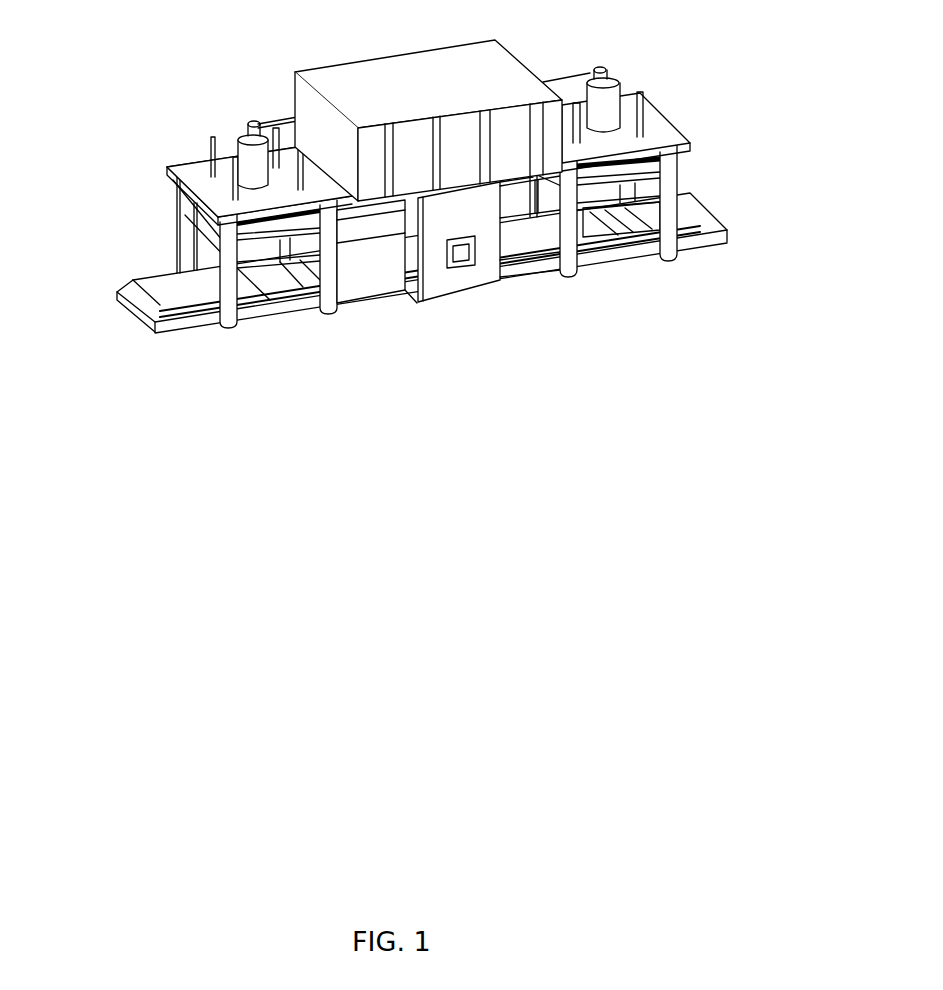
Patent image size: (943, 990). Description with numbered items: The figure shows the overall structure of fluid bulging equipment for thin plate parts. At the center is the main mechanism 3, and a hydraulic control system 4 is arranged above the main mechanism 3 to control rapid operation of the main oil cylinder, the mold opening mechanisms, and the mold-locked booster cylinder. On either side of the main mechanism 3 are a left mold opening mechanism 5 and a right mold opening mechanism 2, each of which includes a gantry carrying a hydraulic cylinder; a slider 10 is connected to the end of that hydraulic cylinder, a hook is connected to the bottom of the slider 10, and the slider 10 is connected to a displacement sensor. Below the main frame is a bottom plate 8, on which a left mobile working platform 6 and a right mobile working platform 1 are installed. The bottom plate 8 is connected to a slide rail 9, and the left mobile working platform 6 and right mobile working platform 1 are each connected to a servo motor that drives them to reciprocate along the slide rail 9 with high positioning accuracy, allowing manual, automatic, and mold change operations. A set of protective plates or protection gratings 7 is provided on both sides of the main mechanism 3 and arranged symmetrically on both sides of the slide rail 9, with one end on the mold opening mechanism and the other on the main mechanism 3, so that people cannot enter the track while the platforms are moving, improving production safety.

The right mobile working platform 1 is at (700, 217).
The right mold opening mechanism 2 is at (693, 143).
The main mechanism 3 is at (487, 267).
The hydraulic control system 4 is at (523, 62).
The left mold opening mechanism 5 is at (163, 173).
The left mobile working platform 6 is at (150, 275).
The protective plates or protection gratings 7 is at (357, 272).
The bottom plate 8 is at (180, 322).
The slide rail 9 is at (300, 307).
The slider 10 is at (203, 222).